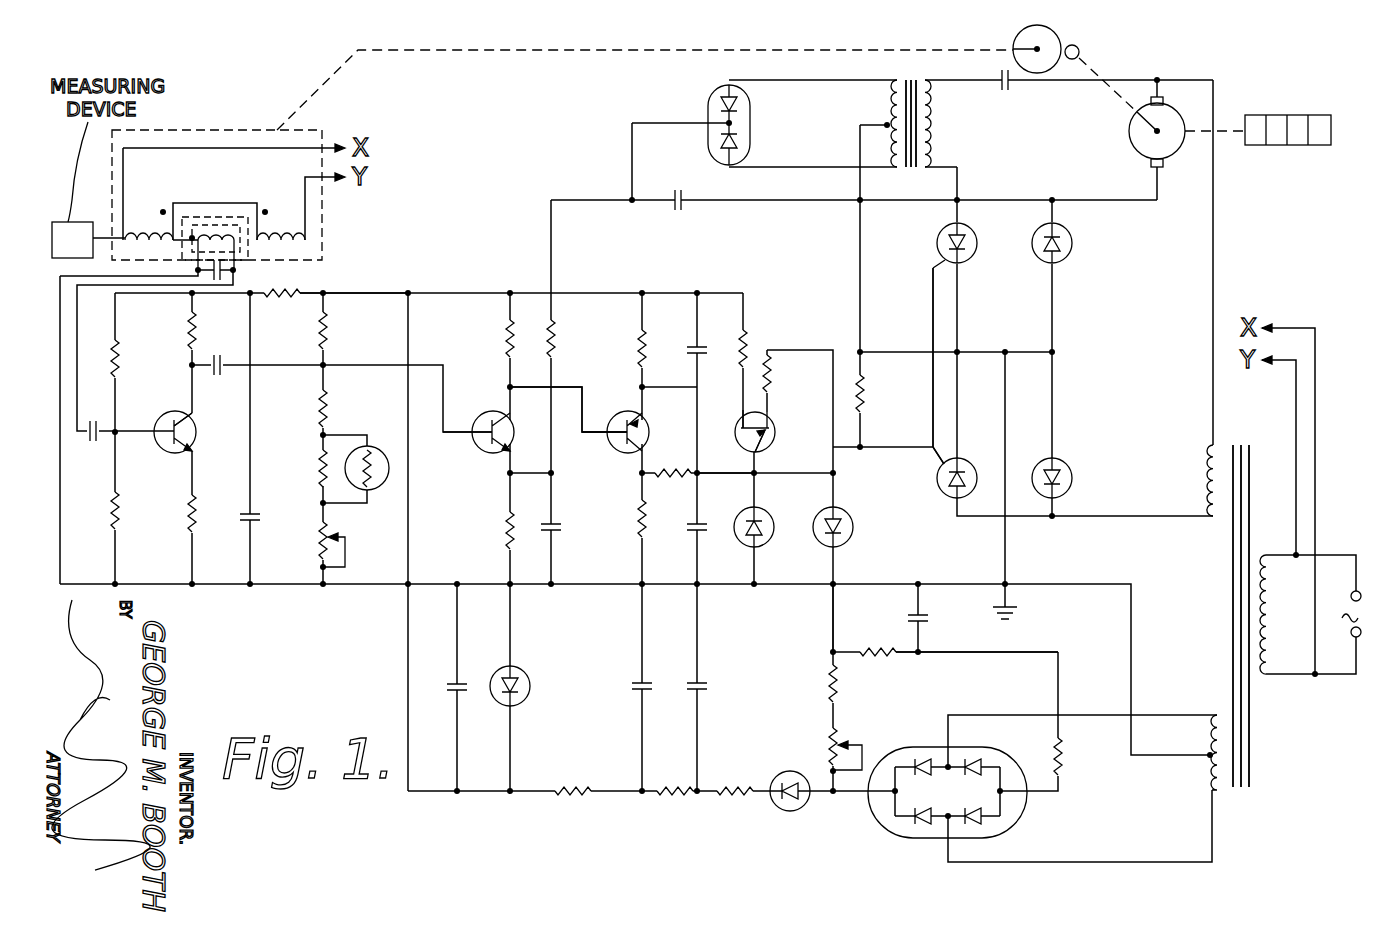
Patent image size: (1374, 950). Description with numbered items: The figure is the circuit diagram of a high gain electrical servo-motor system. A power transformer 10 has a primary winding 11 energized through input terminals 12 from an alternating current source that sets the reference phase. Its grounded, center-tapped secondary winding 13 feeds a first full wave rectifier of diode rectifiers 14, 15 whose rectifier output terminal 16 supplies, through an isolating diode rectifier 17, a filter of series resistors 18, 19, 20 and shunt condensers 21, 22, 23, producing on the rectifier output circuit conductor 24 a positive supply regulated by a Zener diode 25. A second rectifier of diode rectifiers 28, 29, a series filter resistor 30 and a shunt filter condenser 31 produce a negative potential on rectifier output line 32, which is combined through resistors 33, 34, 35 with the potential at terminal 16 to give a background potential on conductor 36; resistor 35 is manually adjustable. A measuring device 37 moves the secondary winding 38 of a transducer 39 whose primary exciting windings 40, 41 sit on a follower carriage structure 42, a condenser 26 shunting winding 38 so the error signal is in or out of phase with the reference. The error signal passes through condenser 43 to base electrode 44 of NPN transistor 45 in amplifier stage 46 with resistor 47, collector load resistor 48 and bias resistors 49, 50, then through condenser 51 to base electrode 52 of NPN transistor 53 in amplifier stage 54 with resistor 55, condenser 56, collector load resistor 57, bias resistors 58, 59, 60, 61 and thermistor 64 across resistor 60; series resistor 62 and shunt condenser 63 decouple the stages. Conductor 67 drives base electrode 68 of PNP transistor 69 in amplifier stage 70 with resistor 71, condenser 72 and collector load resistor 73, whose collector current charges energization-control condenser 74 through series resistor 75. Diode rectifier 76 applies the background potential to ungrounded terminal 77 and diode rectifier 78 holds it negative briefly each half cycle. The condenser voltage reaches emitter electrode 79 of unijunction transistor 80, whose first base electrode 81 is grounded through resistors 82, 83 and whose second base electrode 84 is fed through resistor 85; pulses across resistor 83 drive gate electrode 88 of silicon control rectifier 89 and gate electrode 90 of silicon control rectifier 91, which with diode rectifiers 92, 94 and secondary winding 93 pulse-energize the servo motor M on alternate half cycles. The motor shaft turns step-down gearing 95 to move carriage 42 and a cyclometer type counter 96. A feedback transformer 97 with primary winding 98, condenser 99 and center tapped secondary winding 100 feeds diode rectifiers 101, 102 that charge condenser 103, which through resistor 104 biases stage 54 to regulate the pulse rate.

The power transformer 10 is at (1253, 685).
The primary winding 11 is at (1270, 630).
The input terminals 12 is at (1360, 640).
The secondary winding 13 is at (1205, 775).
The diode rectifier 14 is at (920, 760).
The diode rectifier 15 is at (918, 825).
The rectifier output terminal 16 is at (860, 805).
The isolating diode rectifier 17 is at (790, 812).
The series resistor 18 is at (732, 795).
The series resistor 19 is at (668, 795).
The series resistor 20 is at (570, 795).
The shunt condenser 21 is at (705, 690).
The shunt condenser 22 is at (636, 690).
The shunt condenser 23 is at (452, 695).
The rectifier output circuit conductor 24 is at (357, 292).
The Zener diode 25 is at (528, 690).
The condenser 26 is at (222, 273).
The diode rectifier 28 is at (975, 760).
The diode rectifier 29 is at (972, 825).
The series filter resistor 30 is at (1063, 758).
The shunt filter condenser 31 is at (930, 620).
The rectifier output line 32 is at (896, 660).
The resistor 33 is at (870, 645).
The resistor 34 is at (826, 680).
The resistor 35 is at (826, 742).
The conductor 36 is at (830, 625).
The measuring device 37 is at (72, 222).
The movable secondary winding 38 is at (212, 232).
The transducer 39 is at (330, 215).
The primary exciting winding 40 is at (135, 233).
The primary exciting winding 41 is at (283, 232).
The follower carriage structure 42 is at (323, 135).
The condenser 43 is at (92, 442).
The base electrode 44 is at (163, 450).
The NPN transistor 45 is at (188, 422).
The transistor amplifier stage 46 is at (238, 480).
The emitter temperature stabilizing resistor 47 is at (186, 515).
The collector load resistor 48 is at (190, 325).
The resistor 49 is at (120, 357).
The resistor 50 is at (110, 512).
The condenser 51 is at (218, 355).
The base electrode 52 is at (473, 445).
The NPN transistor 53 is at (483, 412).
The transistor amplifier stage 54 is at (478, 515).
The resistor 55 is at (502, 535).
The condenser 56 is at (562, 530).
The collector load resistor 57 is at (500, 333).
The resistor 58 is at (332, 330).
The resistor 59 is at (318, 410).
The resistor 60 is at (318, 470).
The resistor 61 is at (318, 545).
The series resistor 62 is at (290, 300).
The shunt condenser 63 is at (262, 517).
The thermistor 64 is at (375, 488).
The conductor 67 is at (584, 400).
The base electrode 68 is at (608, 445).
The PNP transistor 69 is at (640, 422).
The amplifier stage 70 is at (698, 454).
The resistor 71 is at (640, 355).
The condenser 72 is at (680, 350).
The collector load resistor 73 is at (638, 515).
The energization-control condenser 74 is at (692, 532).
The series resistor 75 is at (665, 480).
The diode rectifier 76 is at (848, 540).
The ungrounded terminal 77 is at (692, 473).
The diode rectifier 78 is at (765, 542).
The emitter electrode 79 is at (768, 448).
The unijunction transistor 80 is at (775, 433).
The first base electrode 81 is at (770, 418).
The resistor 82 is at (773, 373).
The resistor 83 is at (870, 395).
The second base electrode 84 is at (738, 428).
The resistor 85 is at (738, 350).
The gate electrode 88 is at (942, 262).
The silicon control rectifier 89 is at (972, 234).
The gate electrode 90 is at (938, 468).
The silicon control rectifier 91 is at (965, 460).
The diode rectifier 92 is at (1070, 466).
The secondary winding 93 is at (1205, 475).
The diode rectifier 94 is at (1067, 234).
The step-down gearing 95 is at (1082, 50).
The cyclometer type counter 96 is at (1287, 147).
The transformer 97 is at (910, 170).
The primary winding 98 is at (933, 118).
The condenser 99 is at (1006, 92).
The center tapped secondary winding 100 is at (893, 108).
The diode rectifier 101 is at (744, 105).
The diode rectifier 102 is at (744, 140).
The condenser 103 is at (680, 168).
The resistor 104 is at (562, 343).
The servo motor M is at (1161, 144).